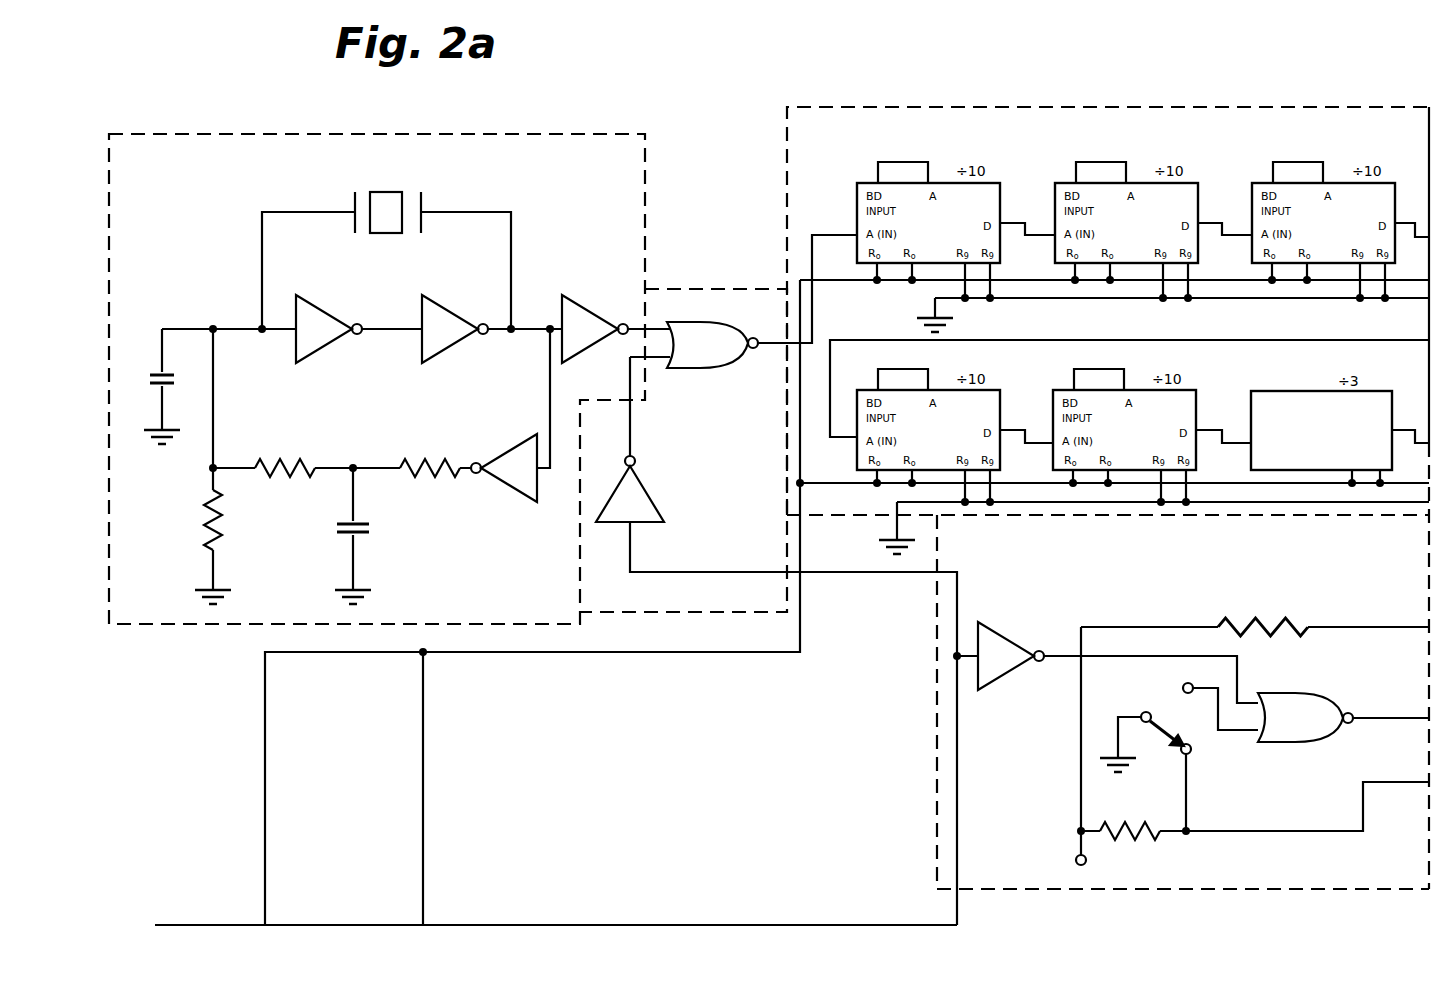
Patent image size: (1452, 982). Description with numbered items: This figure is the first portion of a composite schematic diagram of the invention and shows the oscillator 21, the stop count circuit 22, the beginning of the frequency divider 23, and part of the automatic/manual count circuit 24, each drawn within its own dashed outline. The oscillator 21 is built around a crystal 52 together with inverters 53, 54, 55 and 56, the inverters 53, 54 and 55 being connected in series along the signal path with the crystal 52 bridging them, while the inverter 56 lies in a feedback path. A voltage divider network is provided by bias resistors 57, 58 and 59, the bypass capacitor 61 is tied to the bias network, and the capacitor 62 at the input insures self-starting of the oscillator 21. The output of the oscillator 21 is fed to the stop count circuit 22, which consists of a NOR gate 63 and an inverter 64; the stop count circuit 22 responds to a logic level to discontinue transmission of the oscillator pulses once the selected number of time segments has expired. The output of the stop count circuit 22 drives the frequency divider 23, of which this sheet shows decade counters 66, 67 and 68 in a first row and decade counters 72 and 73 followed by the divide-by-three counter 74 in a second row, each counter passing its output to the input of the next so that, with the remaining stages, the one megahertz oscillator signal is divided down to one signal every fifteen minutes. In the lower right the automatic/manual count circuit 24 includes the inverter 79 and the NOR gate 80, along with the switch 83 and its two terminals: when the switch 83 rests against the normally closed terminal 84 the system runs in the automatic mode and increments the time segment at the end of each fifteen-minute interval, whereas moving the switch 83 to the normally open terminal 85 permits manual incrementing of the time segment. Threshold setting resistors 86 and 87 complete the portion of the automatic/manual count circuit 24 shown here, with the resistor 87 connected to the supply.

The oscillator 21 is at (621, 132).
The stop count circuit 22 is at (723, 288).
The frequency divider 23 is at (820, 107).
The automatic/manual count circuit 24 is at (937, 755).
The crystal 52 is at (432, 192).
The inverter 53 is at (318, 298).
The inverter 54 is at (452, 312).
The inverter 55 is at (574, 296).
The inverter 56 is at (507, 488).
The bias resistor 57 is at (437, 455).
The bias resistor 58 is at (283, 462).
The bias resistor 59 is at (205, 524).
The bypass capacitor 61 is at (342, 530).
The capacitor 62 is at (148, 377).
The NOR gate 63 is at (707, 366).
The inverter 64 is at (650, 495).
The decade counter 66 is at (857, 193).
The decade counter 67 is at (1055, 192).
The decade counter 68 is at (1252, 193).
The decade counter 72 is at (998, 405).
The decade counter 73 is at (1196, 400).
The divide by 3 counter 74 is at (1395, 400).
The inverter 79 is at (1003, 638).
The NOR gate 80 is at (1308, 698).
The switch 83 is at (1160, 733).
The terminal 84 is at (1192, 750).
The normally open terminal 85 is at (1184, 684).
The threshold setting resistor 86 is at (1285, 622).
The threshold setting resistor 87 is at (1128, 838).